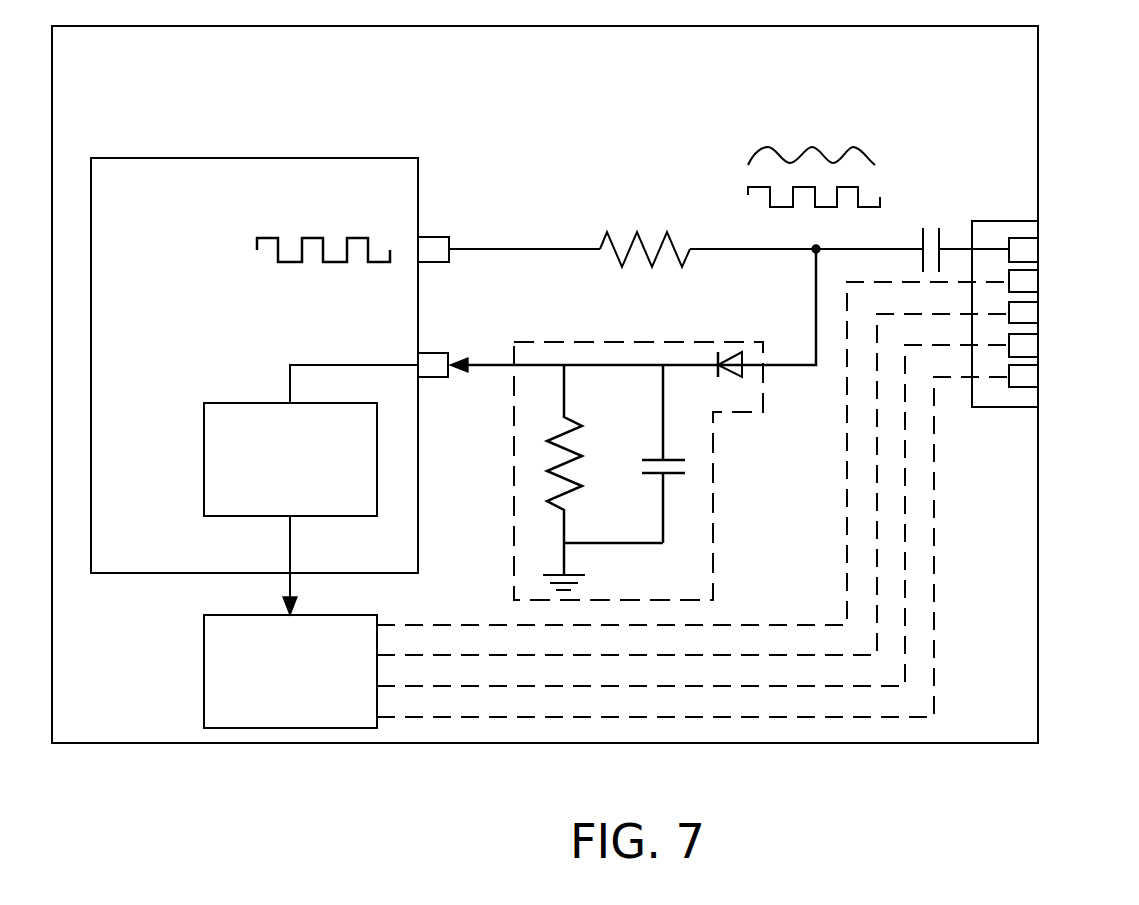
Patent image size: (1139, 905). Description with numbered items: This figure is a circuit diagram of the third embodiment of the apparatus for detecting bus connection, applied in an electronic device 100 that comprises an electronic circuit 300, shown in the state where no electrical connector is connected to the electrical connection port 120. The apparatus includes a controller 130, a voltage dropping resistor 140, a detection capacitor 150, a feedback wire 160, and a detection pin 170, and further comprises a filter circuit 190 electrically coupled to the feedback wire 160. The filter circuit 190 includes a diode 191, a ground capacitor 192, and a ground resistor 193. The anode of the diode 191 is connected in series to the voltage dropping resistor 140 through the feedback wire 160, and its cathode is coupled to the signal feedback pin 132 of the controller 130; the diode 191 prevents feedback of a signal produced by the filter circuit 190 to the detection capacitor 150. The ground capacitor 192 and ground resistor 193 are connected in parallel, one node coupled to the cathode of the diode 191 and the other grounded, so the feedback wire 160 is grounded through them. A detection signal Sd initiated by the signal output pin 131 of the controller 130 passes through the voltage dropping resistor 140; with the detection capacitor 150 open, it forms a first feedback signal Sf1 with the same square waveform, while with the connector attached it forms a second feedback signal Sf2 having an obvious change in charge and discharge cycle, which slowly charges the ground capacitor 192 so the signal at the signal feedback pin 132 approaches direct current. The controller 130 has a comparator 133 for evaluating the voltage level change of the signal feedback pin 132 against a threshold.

The electronic device 100 is at (372, 77).
The controller 130 is at (287, 208).
The signal output pin 131 is at (434, 236).
The signal feedback pin 132 is at (436, 378).
The comparator 133 is at (318, 493).
The voltage dropping resistor 140 is at (650, 200).
The detection capacitor 150 is at (932, 207).
The feedback wire 160 is at (785, 362).
The detection pin 170 is at (1017, 247).
The electrical connection port 120 is at (1039, 332).
The filter circuit 190 is at (715, 563).
The diode 191 is at (737, 334).
The ground capacitor 192 is at (702, 467).
The ground resistor 193 is at (536, 440).
The electronic circuit 300 is at (315, 722).
The detection signal Sd is at (240, 247).
The first feedback signal Sf1 is at (792, 175).
The second feedback signal Sf2 is at (843, 135).